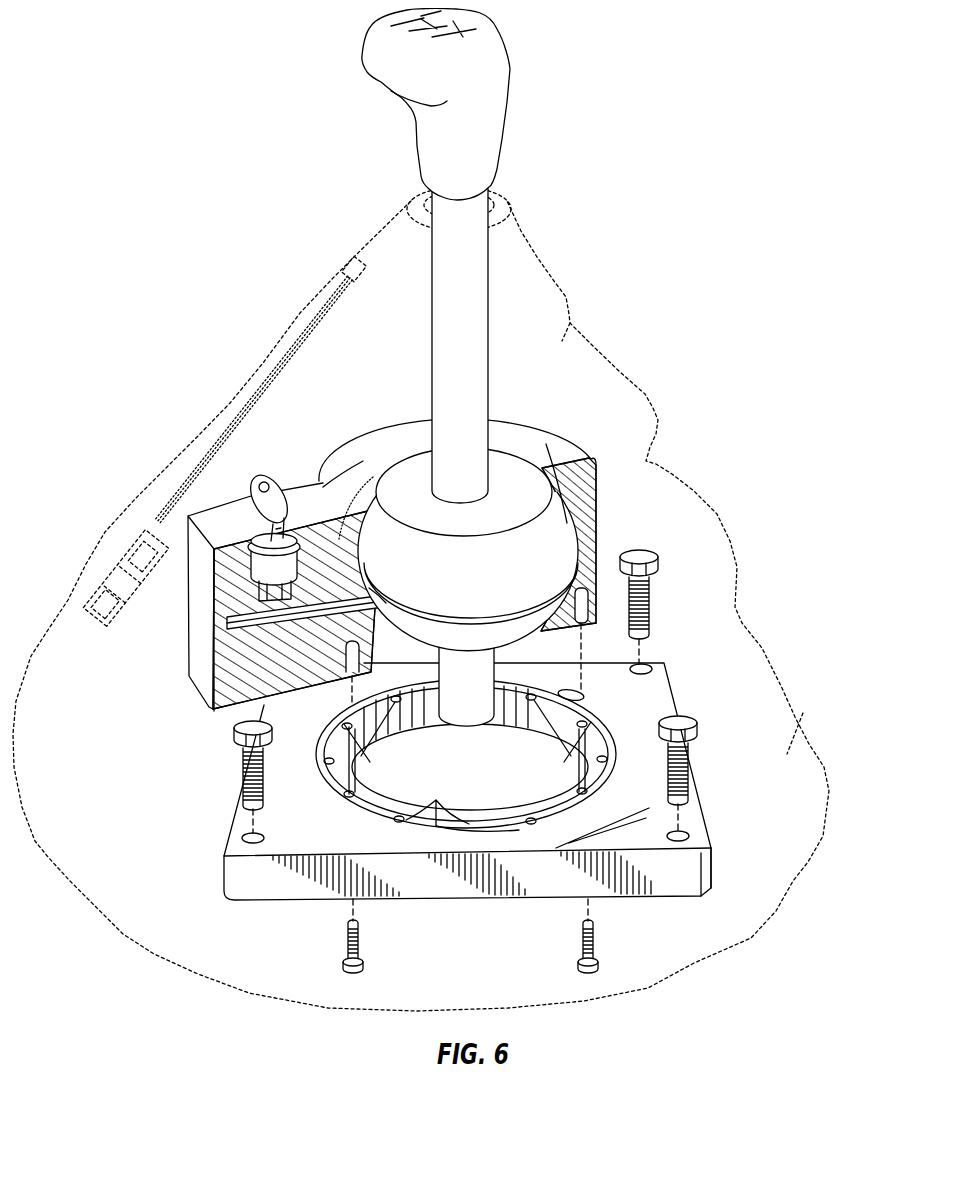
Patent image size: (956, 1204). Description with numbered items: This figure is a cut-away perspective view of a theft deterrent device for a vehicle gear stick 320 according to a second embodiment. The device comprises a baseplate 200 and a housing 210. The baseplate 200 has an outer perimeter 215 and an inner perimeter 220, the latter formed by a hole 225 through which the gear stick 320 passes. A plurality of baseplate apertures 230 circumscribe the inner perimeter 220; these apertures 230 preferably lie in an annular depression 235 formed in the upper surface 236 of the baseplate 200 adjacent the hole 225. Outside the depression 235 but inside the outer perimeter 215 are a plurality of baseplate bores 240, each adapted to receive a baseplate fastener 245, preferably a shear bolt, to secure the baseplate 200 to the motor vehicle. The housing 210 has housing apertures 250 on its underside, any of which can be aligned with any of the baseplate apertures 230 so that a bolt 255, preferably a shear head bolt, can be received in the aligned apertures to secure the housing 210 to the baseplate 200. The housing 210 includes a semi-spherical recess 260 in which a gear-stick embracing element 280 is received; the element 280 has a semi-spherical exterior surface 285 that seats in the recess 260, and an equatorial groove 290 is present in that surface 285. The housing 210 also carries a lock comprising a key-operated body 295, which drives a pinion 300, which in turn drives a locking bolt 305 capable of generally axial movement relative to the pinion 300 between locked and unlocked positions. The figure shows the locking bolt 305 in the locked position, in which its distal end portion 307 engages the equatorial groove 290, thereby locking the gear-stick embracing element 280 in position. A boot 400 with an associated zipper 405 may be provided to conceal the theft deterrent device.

The baseplate 200 is at (538, 843).
The housing 210 is at (545, 441).
The outer perimeter 215 is at (657, 858).
The inner perimeter 220 is at (568, 804).
The hole 225 is at (490, 760).
The baseplate apertures 230 is at (370, 761).
The annular depression 235 is at (580, 695).
The upper surface 236 is at (339, 836).
The baseplate bores 240 is at (646, 660).
The baseplate fastener 245 is at (659, 560).
The housing apertures 250 is at (205, 701).
The bolt 255 is at (340, 962).
The semi-spherical recess 260 is at (597, 512).
The gear-stick embracing element 280 is at (487, 562).
The semi-spherical exterior surface 285 is at (533, 531).
The equatorial groove 290 is at (447, 607).
The key-operated body 295 is at (300, 556).
The pinion 300 is at (260, 592).
The locking bolt 305 is at (346, 648).
The distal end portion 307 is at (362, 456).
The gear stick 320 is at (430, 345).
The boot 400 is at (658, 420).
The zipper 405 is at (268, 356).